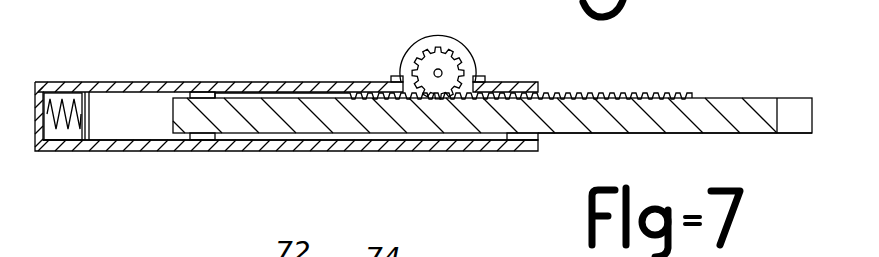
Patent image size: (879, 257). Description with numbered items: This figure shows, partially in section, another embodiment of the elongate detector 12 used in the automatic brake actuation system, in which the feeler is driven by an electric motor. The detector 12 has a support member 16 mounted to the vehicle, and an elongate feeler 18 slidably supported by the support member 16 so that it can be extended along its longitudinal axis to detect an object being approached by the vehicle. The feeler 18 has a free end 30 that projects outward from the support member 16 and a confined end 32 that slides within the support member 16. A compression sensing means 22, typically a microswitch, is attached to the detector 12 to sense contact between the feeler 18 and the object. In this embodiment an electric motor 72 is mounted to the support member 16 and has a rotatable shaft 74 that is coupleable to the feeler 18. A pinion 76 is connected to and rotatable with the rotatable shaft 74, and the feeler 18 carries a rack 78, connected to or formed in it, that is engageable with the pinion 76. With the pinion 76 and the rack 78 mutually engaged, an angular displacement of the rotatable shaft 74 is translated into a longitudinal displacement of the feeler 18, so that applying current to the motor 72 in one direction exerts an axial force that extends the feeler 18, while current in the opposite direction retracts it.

The elongate detector 12 is at (565, 64).
The support member 16 is at (236, 82).
The elongate feeler 18 is at (674, 134).
The compression sensing means 22 is at (806, 150).
The free end 30 is at (838, 73).
The confined end 32 is at (146, 121).
The electric motor 72 is at (417, 48).
The rotatable shaft 74 is at (441, 71).
The pinion 76 is at (462, 69).
The rack 78 is at (622, 97).